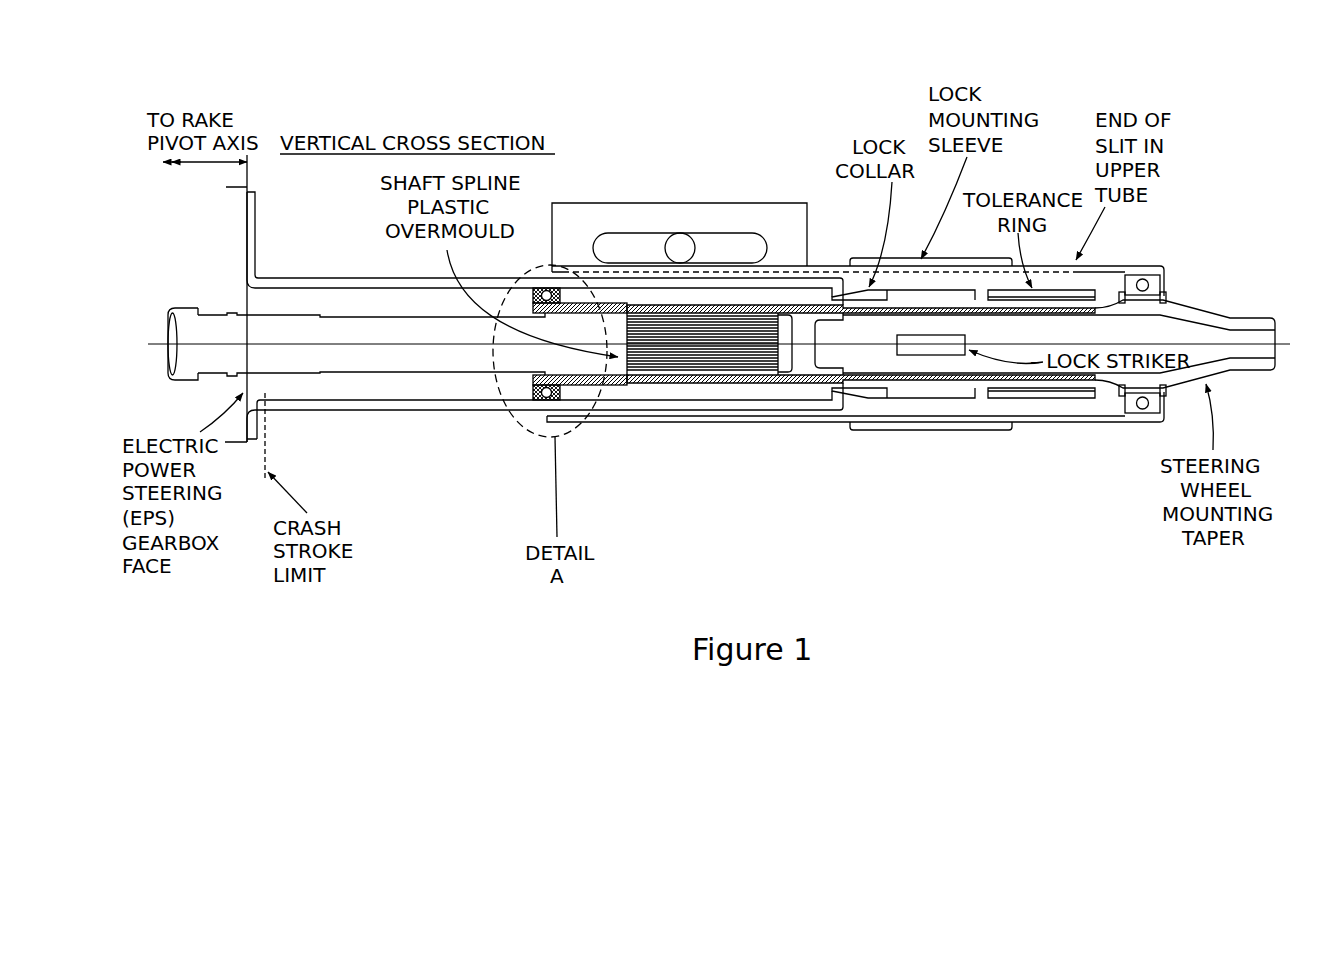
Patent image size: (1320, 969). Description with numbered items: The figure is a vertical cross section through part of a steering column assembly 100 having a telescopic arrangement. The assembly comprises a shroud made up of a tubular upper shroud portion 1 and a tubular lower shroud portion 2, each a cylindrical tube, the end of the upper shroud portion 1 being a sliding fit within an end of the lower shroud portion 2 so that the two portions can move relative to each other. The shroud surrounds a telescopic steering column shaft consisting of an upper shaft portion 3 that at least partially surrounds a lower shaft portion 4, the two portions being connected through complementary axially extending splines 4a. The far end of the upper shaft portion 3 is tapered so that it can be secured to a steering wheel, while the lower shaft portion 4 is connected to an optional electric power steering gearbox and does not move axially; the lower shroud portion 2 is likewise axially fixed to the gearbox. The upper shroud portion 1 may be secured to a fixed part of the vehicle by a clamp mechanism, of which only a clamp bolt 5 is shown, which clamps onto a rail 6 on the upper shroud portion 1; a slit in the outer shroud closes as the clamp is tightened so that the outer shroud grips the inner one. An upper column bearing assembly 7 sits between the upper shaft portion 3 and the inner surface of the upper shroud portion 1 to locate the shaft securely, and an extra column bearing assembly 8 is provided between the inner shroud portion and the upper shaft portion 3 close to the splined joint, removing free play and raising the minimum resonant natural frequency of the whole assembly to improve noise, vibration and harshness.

The upper shroud portion 1 is at (1056, 428).
The lower shroud portion 2 is at (450, 413).
The upper shaft portion 3 is at (759, 391).
The lower shaft portion 4 is at (337, 332).
The axially extending splines 4a is at (633, 310).
The clamp bolt 5 is at (686, 231).
The rail 6 is at (808, 233).
The upper column bearing assembly 7 is at (1148, 268).
The extra column bearing assembly 8 is at (578, 411).
The steering column assembly 100 is at (831, 121).